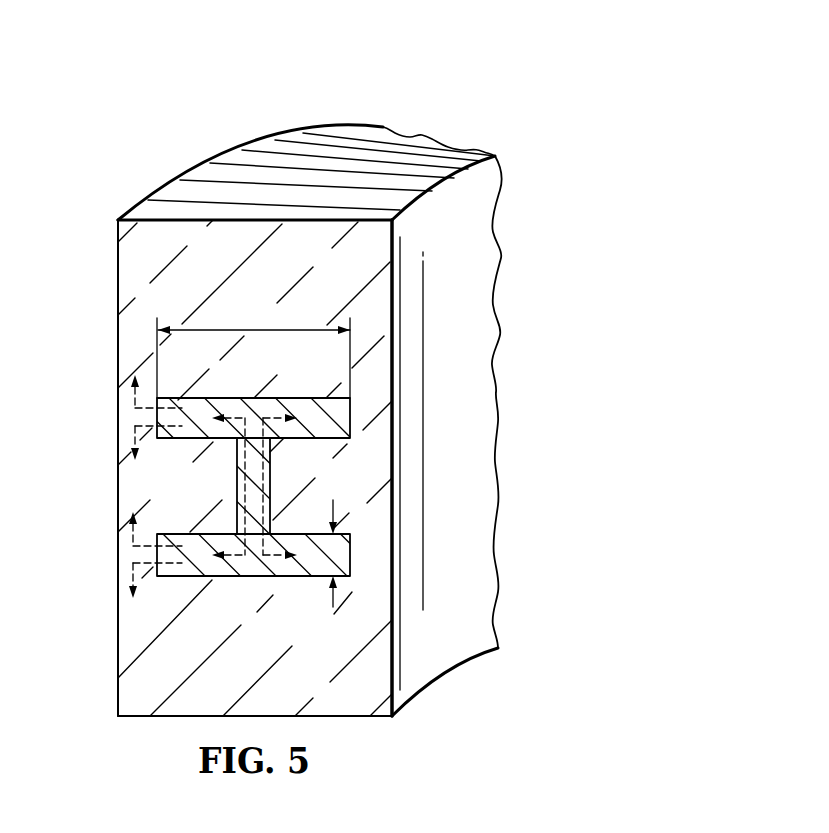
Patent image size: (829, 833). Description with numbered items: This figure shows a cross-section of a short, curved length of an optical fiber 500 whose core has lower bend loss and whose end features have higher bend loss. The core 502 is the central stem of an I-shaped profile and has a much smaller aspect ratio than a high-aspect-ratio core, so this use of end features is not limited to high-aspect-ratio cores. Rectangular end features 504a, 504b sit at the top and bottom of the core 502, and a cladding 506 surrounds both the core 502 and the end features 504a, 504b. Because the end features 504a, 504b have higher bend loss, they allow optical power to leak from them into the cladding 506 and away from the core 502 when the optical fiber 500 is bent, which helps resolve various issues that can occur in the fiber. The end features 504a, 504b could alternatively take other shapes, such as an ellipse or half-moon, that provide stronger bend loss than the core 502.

The optical fiber 500 is at (470, 82).
The core 502 is at (237, 490).
The end feature 504a is at (302, 405).
The end feature 504b is at (280, 565).
The cladding 506 is at (125, 278).